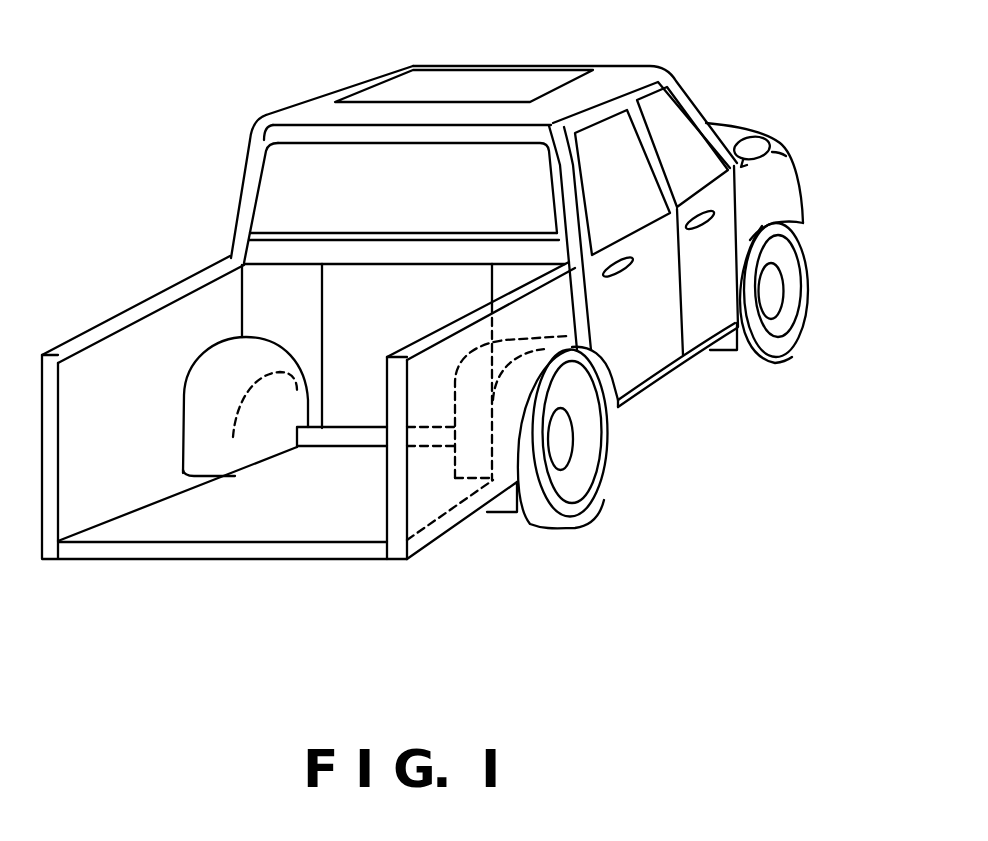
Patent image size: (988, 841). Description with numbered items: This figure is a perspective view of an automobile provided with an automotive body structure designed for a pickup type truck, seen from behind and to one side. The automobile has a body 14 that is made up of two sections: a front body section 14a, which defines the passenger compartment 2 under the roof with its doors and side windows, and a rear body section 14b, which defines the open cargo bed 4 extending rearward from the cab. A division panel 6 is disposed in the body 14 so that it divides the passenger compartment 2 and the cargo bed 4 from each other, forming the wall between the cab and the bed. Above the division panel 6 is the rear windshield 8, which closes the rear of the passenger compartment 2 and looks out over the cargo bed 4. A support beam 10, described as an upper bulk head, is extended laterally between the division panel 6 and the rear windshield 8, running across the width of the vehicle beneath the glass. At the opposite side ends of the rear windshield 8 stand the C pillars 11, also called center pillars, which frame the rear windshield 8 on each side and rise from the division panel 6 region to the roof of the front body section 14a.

The passenger compartment 2 is at (308, 165).
The cargo bed 4 is at (258, 510).
The division panel 6 is at (335, 308).
The rear windshield 8 is at (280, 210).
The support beam (upper bulk head) 10 is at (410, 252).
The C (center) pillar 11 is at (253, 180).
The body 14 is at (684, 399).
The front body section 14a is at (693, 90).
The rear body section 14b is at (443, 502).